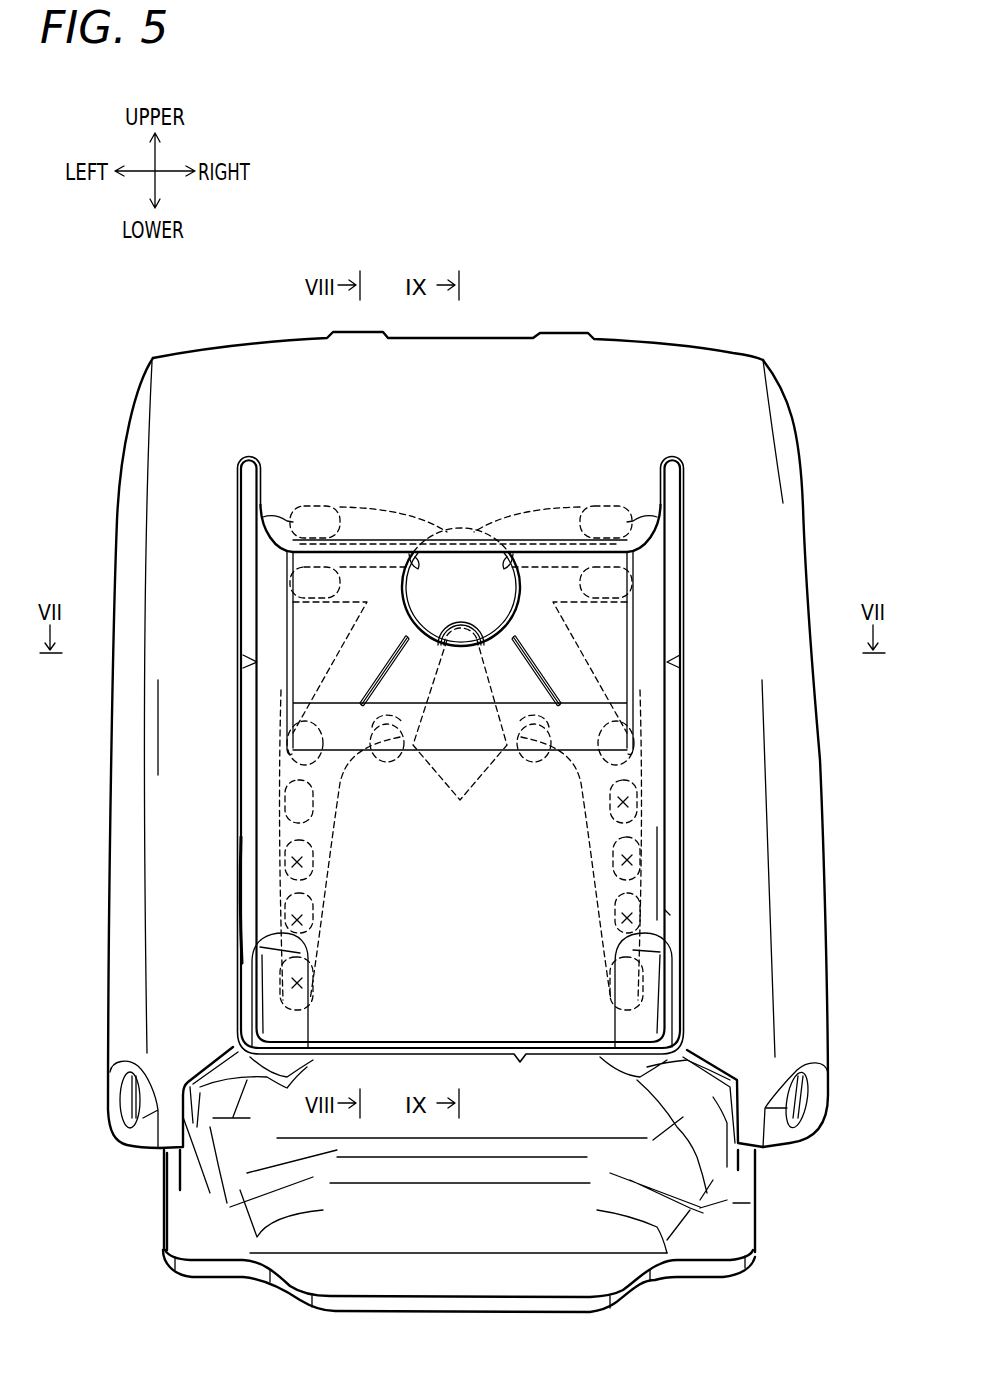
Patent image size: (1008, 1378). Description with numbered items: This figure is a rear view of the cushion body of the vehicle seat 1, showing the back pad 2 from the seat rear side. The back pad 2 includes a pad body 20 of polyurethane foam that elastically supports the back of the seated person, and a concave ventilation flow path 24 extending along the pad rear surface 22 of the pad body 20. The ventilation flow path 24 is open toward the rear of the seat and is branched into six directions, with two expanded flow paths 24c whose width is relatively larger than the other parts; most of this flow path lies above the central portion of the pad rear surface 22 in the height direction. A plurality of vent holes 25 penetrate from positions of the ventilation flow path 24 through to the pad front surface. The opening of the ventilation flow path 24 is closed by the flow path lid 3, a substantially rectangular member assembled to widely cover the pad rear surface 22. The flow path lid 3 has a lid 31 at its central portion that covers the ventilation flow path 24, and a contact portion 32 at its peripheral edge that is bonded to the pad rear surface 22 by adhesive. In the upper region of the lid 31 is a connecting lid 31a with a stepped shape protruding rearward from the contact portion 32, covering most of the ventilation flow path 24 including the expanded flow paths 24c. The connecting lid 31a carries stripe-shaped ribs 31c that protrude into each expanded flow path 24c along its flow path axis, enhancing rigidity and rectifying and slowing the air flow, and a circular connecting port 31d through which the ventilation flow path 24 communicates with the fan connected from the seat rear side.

The vehicle seat 1 is at (709, 195).
The back pad 2 is at (733, 343).
The flow path lid 3 is at (545, 952).
The pad body 20 is at (617, 360).
The pad rear surface 22 is at (551, 1013).
The ventilation flow path 24 is at (369, 518).
The expanded flow paths 24c is at (460, 739).
The vent holes 25 is at (297, 983).
The lid 31 is at (614, 627).
The connecting lid 31a is at (318, 622).
The ribs 31c is at (385, 665).
The connecting port 31d is at (416, 605).
The contact portion 32 is at (273, 573).